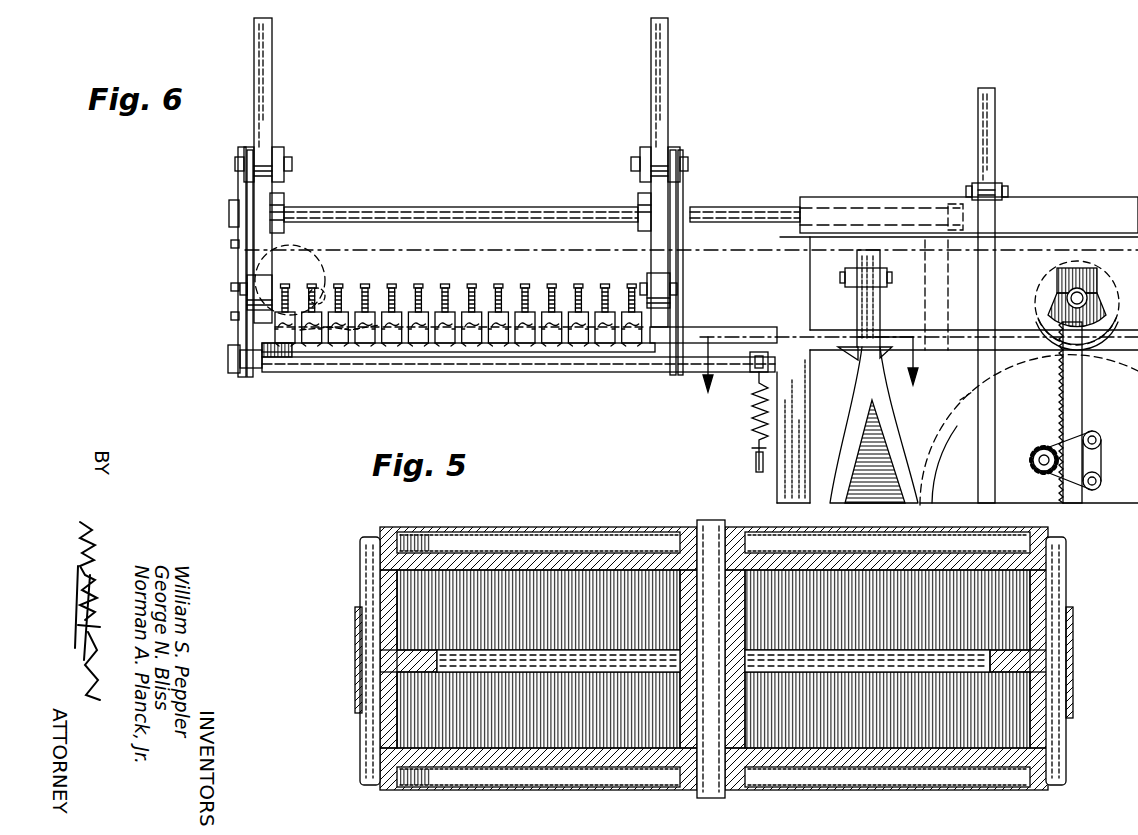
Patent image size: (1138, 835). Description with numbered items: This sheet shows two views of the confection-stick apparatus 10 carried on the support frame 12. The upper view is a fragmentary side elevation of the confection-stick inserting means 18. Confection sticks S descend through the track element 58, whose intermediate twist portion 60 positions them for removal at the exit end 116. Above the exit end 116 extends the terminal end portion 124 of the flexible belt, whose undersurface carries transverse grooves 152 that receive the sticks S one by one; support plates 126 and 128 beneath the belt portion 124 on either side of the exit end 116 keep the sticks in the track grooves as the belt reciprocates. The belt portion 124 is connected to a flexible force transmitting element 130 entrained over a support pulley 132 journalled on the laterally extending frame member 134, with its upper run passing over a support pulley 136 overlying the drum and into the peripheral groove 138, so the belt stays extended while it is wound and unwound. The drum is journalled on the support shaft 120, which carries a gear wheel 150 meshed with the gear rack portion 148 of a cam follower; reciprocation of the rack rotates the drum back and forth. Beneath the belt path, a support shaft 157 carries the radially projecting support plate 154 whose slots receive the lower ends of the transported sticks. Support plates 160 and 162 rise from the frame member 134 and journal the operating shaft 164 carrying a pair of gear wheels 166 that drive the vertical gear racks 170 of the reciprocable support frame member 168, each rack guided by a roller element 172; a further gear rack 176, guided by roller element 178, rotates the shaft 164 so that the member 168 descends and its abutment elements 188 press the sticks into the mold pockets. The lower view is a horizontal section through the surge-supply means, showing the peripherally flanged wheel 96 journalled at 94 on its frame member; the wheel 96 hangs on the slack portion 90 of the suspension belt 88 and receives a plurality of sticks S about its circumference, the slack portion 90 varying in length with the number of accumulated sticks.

In FIG. 6, the gear racks 170 is at (273, 53).
In FIG. 6, the roller element 172 is at (262, 160).
In FIG. 6, the support plate 162 is at (238, 190).
In FIG. 6, the gear wheels 166 is at (283, 198).
In FIG. 6, the confection-stick inserting means 18 is at (432, 208).
In FIG. 6, the operating shaft 164 is at (490, 207).
In FIG. 6, the support plate 160 is at (684, 196).
In FIG. 6, the laterally extending frame member 134 is at (745, 240).
In FIG. 6, the transverse grooves 152 is at (366, 345).
In FIG. 6, the support plate 154 is at (436, 352).
In FIG. 6, the support pulley 132 is at (326, 274).
In FIG. 6, the abutment elements 188 is at (400, 318).
In FIG. 6, the flexible force transmitting element 130 is at (456, 312).
In FIG. 6, the reciprocable support frame member 168 is at (622, 300).
In FIG. 6, the terminal end portion of belt 124 is at (487, 352).
In FIG. 6, the support shaft 157 is at (678, 365).
In FIG. 6, the apparatus 10 is at (813, 369).
In FIG. 6, the support frame 12 is at (778, 490).
In FIG. 6, the reciprocable gear rack 176 is at (996, 130).
In FIG. 6, the roller element 178 is at (996, 188).
In FIG. 6, the exit end 116 is at (866, 335).
In FIG. 6, the support plate 128 is at (850, 355).
In FIG. 6, the support plate 126 is at (884, 352).
In FIG. 6, the twist portion 60 is at (868, 400).
In FIG. 6, the track element 58 is at (850, 468).
In FIG. 6, the confection sticks S is at (876, 482).
In FIG. 5, the confection sticks S is at (362, 730).
In FIG. 6, the support pulley 136 is at (1105, 337).
In FIG. 6, the peripheral groove 138 is at (1047, 347).
In FIG. 6, the gear rack portion 148 is at (1082, 398).
In FIG. 6, the support shaft 120 is at (1044, 463).
In FIG. 6, the gear wheel 150 is at (1033, 418).
In FIG. 5, the peripherally flanged wheel 96 is at (492, 538).
In FIG. 5, the suspension belt 88 is at (1040, 663).
In FIG. 5, the journal 94 is at (713, 530).
In FIG. 5, the slack portion 90 is at (358, 630).